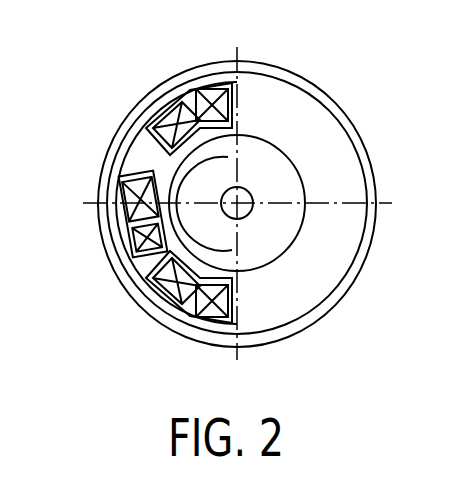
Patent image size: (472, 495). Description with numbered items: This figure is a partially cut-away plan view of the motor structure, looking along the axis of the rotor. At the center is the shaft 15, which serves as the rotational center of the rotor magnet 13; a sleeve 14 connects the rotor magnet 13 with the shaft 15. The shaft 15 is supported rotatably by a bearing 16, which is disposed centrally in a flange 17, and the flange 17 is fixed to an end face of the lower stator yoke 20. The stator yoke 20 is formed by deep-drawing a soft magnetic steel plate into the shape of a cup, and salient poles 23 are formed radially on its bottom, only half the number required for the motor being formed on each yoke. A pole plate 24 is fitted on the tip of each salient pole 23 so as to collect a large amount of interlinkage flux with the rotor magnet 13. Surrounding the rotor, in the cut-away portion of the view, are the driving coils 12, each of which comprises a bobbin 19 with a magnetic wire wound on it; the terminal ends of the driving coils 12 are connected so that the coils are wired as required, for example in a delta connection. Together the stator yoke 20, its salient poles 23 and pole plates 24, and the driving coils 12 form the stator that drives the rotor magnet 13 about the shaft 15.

The driving coil 12 is at (183, 105).
The rotor magnet 13 is at (220, 148).
The sleeve 14 is at (228, 173).
The shaft 15 is at (250, 197).
The bearing 16 is at (268, 210).
The flange 17 is at (297, 293).
The bobbin 19 is at (172, 117).
The stator yoke 20 is at (146, 298).
The salient pole 23 is at (140, 155).
The pole plate 24 is at (125, 214).